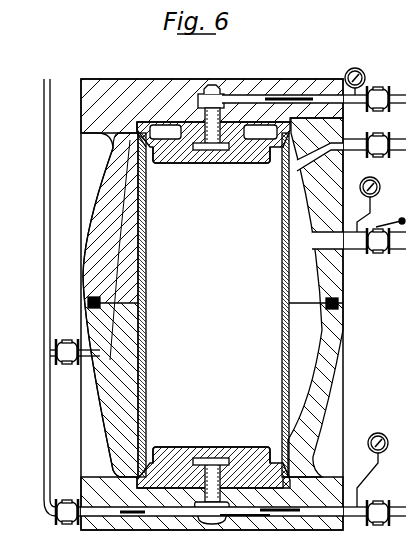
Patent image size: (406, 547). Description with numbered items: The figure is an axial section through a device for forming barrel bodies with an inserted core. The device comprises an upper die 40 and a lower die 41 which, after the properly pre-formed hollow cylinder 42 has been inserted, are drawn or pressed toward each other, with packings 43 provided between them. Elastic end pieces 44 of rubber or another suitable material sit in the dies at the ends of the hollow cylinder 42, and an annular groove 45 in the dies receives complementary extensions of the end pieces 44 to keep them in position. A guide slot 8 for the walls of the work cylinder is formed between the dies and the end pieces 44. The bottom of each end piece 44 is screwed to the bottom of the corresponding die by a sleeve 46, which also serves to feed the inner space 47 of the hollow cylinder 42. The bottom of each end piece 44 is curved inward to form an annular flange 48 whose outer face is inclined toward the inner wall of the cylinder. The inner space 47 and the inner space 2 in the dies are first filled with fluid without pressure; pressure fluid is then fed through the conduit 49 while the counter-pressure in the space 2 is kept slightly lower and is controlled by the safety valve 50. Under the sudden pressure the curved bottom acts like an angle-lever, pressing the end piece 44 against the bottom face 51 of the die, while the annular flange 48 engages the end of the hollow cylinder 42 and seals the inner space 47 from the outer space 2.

The inner space 2 is at (303, 286).
The guide slot 8 is at (293, 143).
The upper die 40 is at (115, 193).
The lower die 41 is at (110, 397).
The hollow cylinder 42 is at (138, 220).
The packings 43 is at (92, 300).
The elastic end pieces 44 is at (163, 133).
The annular groove 45 is at (137, 127).
The sleeve 46 is at (204, 98).
The inner space 47 is at (230, 343).
The annular flange 48 is at (155, 457).
The conduit 49 is at (291, 102).
The safety valve 50 is at (380, 253).
The bottom face 51 is at (167, 122).